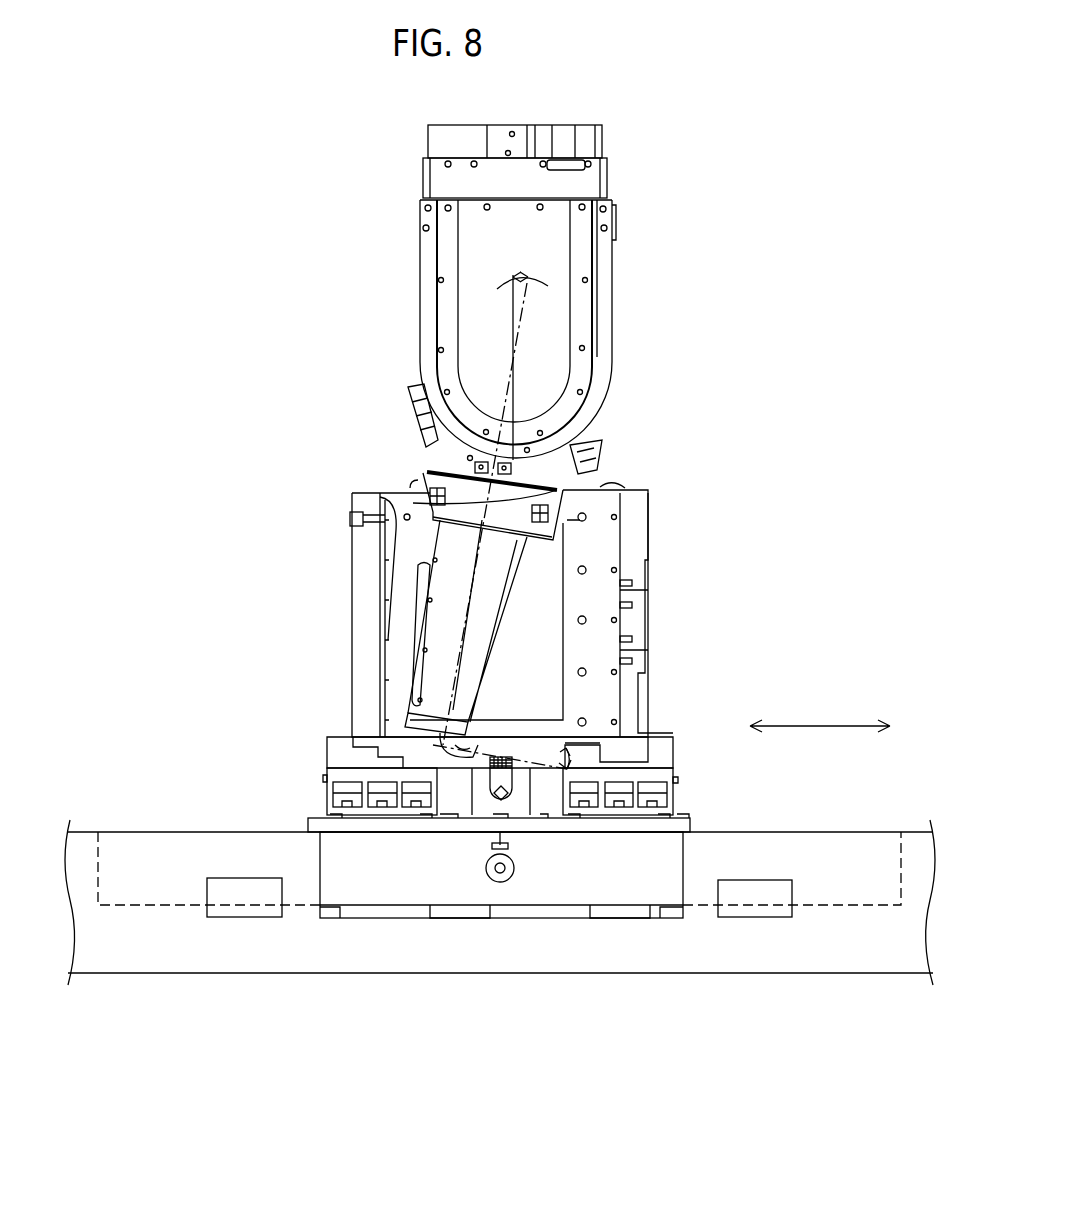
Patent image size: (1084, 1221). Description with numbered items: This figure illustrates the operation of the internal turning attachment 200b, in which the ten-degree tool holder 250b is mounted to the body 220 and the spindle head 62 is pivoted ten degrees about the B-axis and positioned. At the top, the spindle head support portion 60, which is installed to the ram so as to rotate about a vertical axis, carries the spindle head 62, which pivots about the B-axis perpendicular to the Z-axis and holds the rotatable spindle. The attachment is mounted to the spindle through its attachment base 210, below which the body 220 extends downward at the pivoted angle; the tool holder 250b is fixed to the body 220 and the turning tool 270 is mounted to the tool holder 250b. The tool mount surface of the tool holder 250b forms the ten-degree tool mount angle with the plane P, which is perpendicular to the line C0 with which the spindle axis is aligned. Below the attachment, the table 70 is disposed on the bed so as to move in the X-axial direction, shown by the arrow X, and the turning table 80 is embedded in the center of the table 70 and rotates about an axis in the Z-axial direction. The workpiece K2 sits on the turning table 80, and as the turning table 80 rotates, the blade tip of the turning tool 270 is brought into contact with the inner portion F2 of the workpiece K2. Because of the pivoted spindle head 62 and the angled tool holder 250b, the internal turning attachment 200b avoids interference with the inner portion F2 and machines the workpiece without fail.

The spindle head support portion 60 is at (545, 298).
The spindle head 62 is at (443, 447).
The attachment base 210 is at (447, 477).
The body 220 is at (447, 620).
The internal turning attachment 200b is at (527, 620).
The 10° tool holder 250b is at (412, 735).
The turning tool 270 is at (430, 748).
The turning table 80 is at (333, 857).
The table 70 is at (293, 953).
The inner portion of workpiece F2 is at (388, 502).
The line with which the spindle axis is aligned C0 is at (623, 488).
The workpiece K2 is at (633, 547).
The plane perpendicular to the line C0 P is at (541, 755).
The X-axial direction X is at (820, 715).